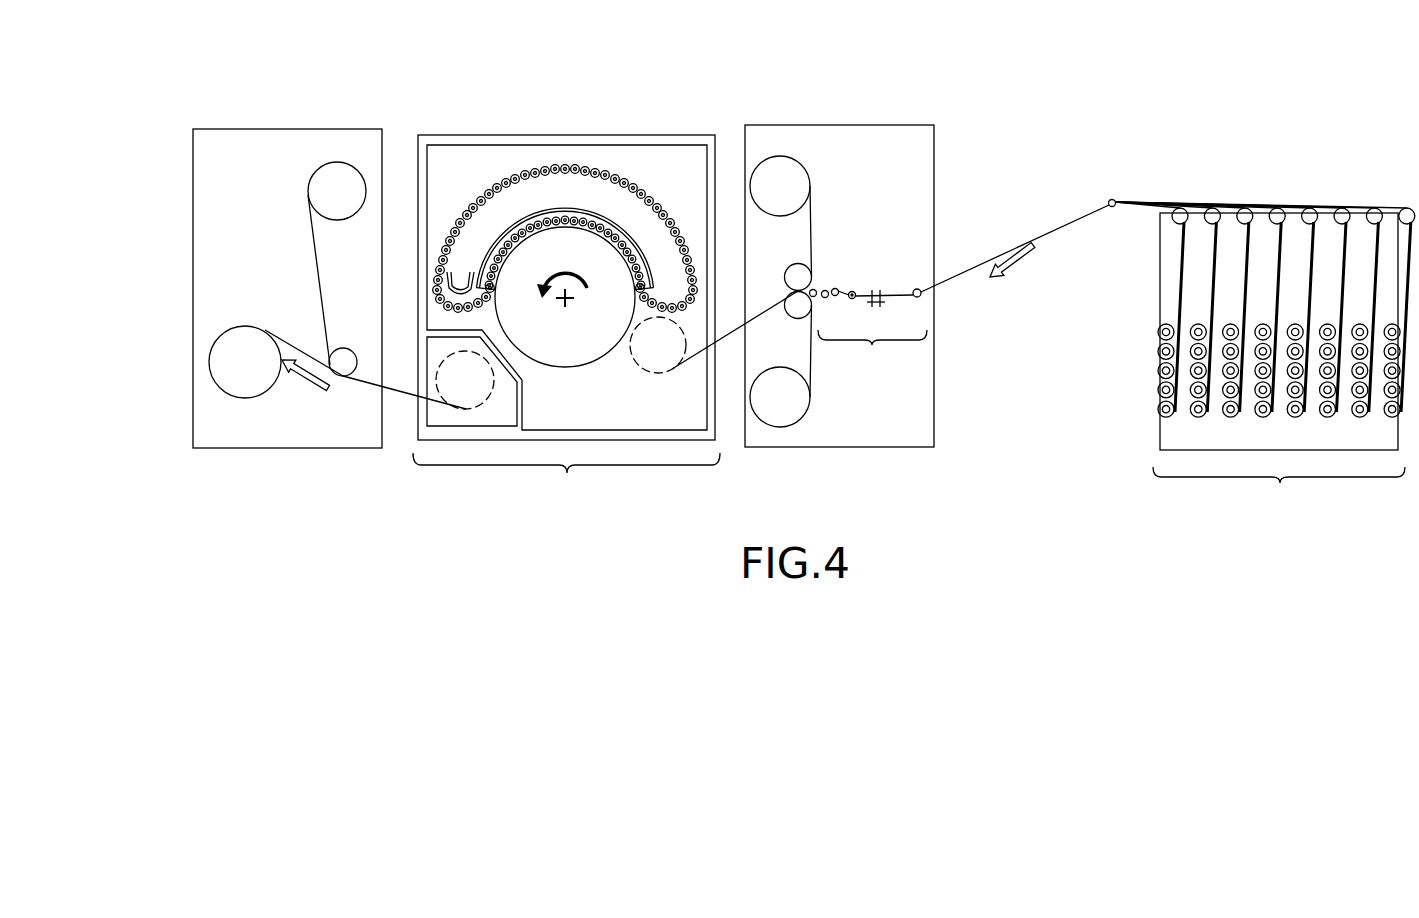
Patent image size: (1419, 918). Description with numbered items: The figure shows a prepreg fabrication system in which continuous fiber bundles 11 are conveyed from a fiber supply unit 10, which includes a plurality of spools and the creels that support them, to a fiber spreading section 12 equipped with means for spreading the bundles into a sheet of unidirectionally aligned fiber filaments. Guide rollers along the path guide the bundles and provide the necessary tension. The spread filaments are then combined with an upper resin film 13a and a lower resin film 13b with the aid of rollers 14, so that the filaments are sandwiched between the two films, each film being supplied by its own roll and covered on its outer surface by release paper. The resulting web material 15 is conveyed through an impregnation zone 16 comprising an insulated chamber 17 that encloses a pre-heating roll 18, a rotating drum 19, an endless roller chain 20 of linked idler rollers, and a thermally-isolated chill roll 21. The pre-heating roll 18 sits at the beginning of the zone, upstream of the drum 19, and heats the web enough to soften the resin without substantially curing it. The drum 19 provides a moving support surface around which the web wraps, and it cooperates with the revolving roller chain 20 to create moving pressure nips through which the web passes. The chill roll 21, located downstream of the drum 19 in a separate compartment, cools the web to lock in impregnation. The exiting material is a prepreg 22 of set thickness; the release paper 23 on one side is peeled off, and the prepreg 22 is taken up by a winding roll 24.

The fiber supply unit 10 is at (1265, 360).
The continuous fiber bundles 11 is at (1068, 205).
The fiber spreading section 12 is at (869, 335).
The upper resin film 13a is at (820, 205).
The lower resin film 13b is at (818, 389).
The rollers 14 is at (794, 302).
The web material 15 is at (727, 347).
The impregnation zone 16 is at (566, 326).
The insulated chamber 17 is at (719, 132).
The pre-heating roll 18 is at (690, 314).
The rotating drum 19 is at (601, 265).
The endless roller chain 20 is at (621, 167).
The chill roll 21 is at (468, 372).
The prepreg 22 is at (401, 399).
The release paper 23 is at (305, 265).
The winding roll 24 is at (209, 380).